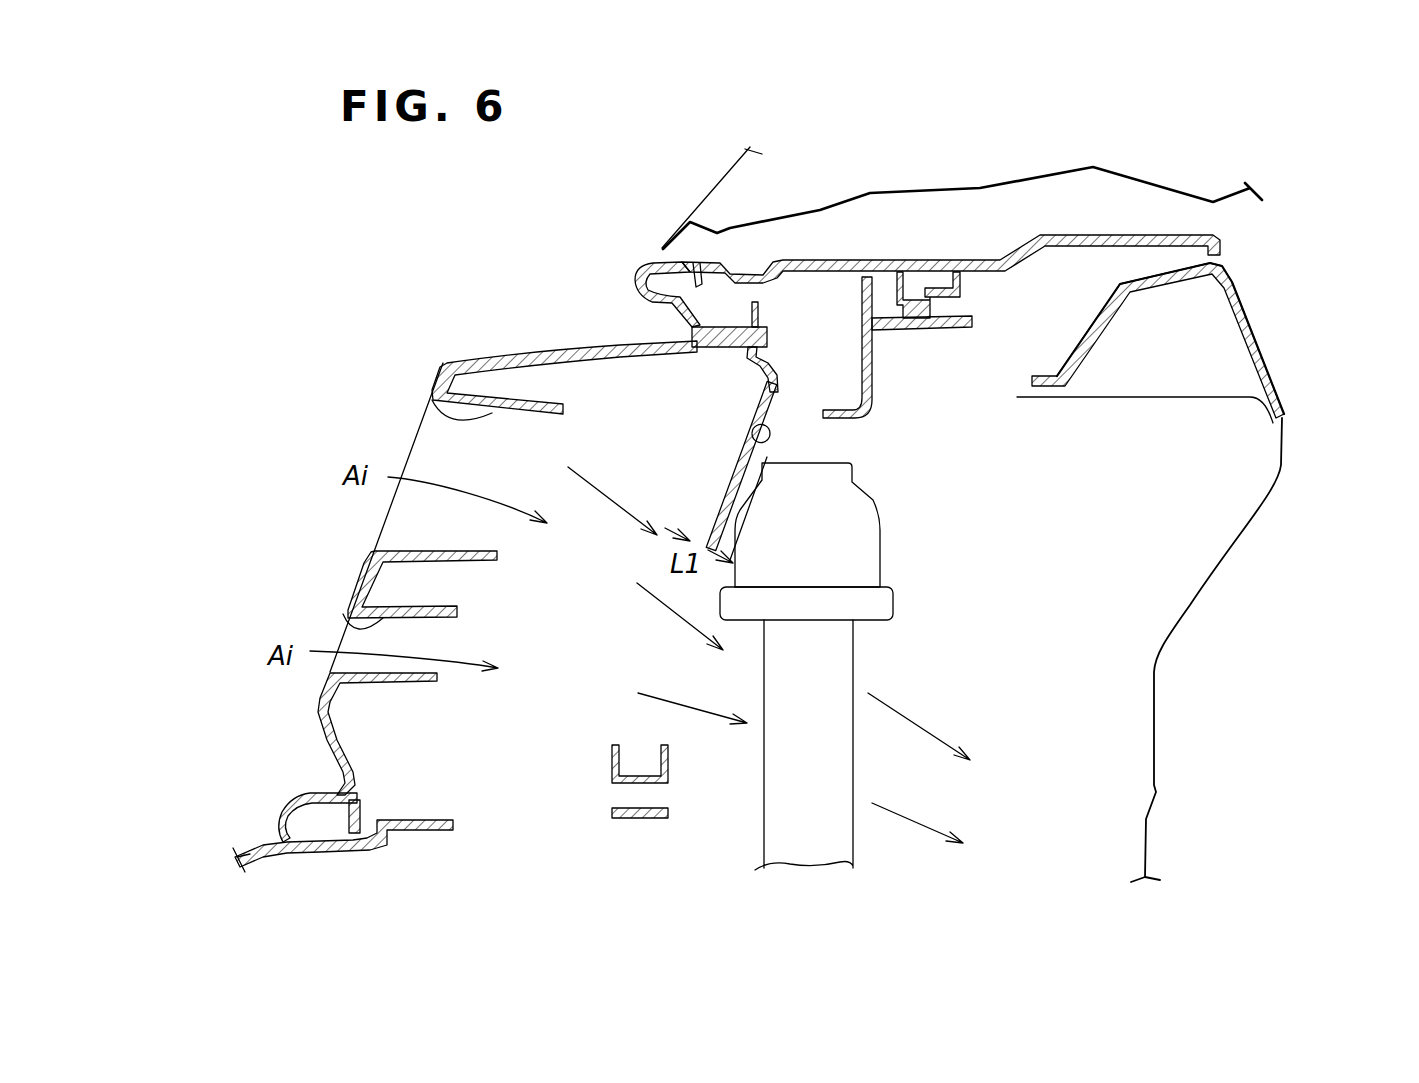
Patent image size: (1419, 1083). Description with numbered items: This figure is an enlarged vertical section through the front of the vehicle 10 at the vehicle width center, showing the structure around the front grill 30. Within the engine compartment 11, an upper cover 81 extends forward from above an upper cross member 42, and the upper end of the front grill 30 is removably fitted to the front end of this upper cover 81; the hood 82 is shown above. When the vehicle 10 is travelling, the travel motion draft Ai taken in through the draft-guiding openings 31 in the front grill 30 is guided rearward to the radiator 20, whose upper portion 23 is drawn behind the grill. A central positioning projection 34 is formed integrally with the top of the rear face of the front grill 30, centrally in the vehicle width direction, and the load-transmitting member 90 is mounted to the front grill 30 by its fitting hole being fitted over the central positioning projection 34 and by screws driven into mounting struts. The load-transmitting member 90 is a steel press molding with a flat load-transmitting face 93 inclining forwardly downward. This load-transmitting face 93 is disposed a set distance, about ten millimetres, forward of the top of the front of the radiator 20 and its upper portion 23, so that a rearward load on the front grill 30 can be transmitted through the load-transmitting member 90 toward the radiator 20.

The vehicle 10 is at (339, 216).
The engine compartment 11 is at (1146, 531).
The radiator 20 is at (845, 672).
The strut cap 23 is at (862, 500).
The front grill 30 is at (508, 355).
The draft-guiding openings 31 is at (432, 400).
The central positioning projection 34 is at (730, 338).
The upper cross member 42 is at (1258, 338).
The upper cover 81 is at (1042, 232).
The hood 82 is at (718, 190).
The load-transmitting member 90 is at (777, 363).
The load-transmitting face 93 is at (748, 448).